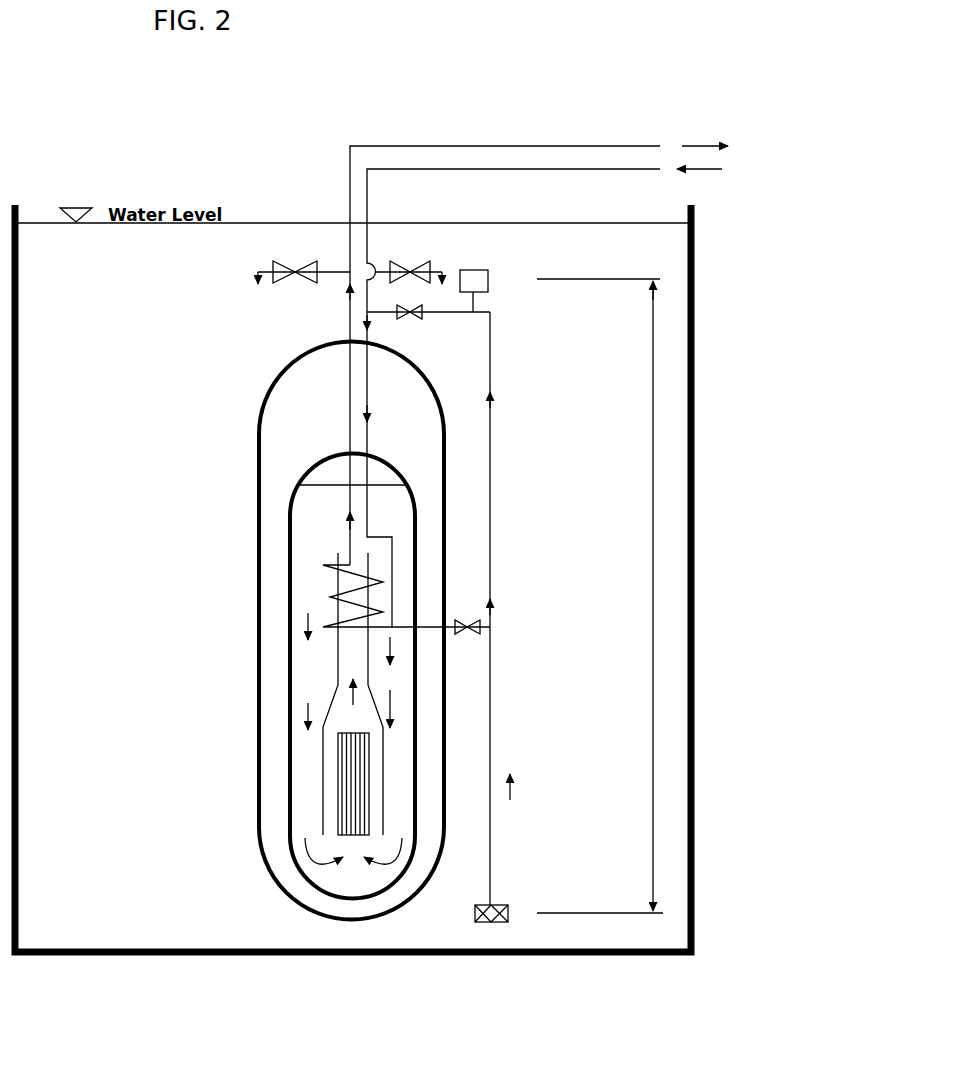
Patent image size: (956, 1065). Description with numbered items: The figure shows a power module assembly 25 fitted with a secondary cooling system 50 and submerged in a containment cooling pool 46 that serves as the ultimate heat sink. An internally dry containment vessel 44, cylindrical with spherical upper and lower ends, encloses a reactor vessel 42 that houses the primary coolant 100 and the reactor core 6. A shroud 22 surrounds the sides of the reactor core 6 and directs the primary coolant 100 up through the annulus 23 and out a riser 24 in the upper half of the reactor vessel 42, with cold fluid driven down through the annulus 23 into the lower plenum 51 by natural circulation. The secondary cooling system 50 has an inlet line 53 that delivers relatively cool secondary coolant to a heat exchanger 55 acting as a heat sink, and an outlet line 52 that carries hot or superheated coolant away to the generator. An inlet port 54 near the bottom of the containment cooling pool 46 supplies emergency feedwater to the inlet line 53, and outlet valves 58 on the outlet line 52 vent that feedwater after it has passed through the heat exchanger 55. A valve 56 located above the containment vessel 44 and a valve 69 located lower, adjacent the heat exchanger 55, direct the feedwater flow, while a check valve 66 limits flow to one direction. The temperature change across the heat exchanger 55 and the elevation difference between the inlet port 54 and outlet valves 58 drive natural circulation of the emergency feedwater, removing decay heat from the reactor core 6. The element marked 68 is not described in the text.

The reactor core 6 is at (340, 793).
The shroud 22 is at (312, 768).
The annulus 23 is at (323, 663).
The riser 24 is at (322, 547).
The power module assembly 25 is at (242, 447).
The reactor vessel 42 is at (427, 550).
The containment vessel 44 is at (255, 400).
The containment cooling pool 46 is at (352, 957).
The secondary cooling system 50 is at (527, 348).
The lower plenum 51 is at (337, 885).
The outlet line 52 is at (382, 146).
The inlet line 53 is at (520, 169).
The inlet port 54 is at (503, 890).
The heat exchanger 55 is at (327, 597).
The valve 56 is at (418, 316).
The outlet valve 58 is at (233, 279).
The check valve 66 is at (523, 780).
The vent valve 68 is at (493, 297).
The valve 69 is at (473, 633).
The primary coolant 100 is at (384, 482).